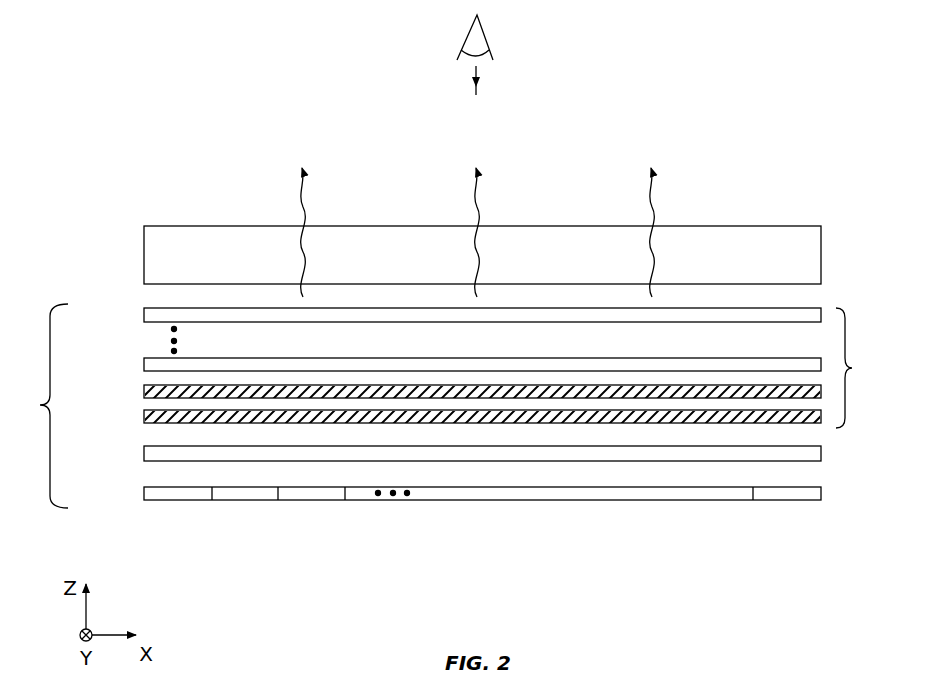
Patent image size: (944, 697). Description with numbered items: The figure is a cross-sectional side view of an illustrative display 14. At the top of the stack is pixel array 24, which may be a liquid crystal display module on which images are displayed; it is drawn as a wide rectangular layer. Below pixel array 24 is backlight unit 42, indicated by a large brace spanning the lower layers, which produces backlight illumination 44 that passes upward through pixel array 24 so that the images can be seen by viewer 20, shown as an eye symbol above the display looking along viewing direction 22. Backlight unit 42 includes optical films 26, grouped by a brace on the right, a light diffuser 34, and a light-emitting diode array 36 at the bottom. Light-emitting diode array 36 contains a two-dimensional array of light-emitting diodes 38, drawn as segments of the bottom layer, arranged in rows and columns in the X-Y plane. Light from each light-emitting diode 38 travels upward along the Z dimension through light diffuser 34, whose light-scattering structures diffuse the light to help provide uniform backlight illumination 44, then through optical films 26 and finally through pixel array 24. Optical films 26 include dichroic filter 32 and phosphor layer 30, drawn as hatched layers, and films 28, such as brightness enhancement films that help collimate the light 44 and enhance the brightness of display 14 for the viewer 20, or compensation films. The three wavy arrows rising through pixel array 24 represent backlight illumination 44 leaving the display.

The display 14 is at (803, 146).
The viewer 20 is at (479, 33).
The viewing direction 22 is at (478, 82).
The pixel array 24 is at (821, 253).
The optical films 26 is at (857, 368).
The films 28 is at (144, 364).
The phosphor layer 30 is at (144, 392).
The dichroic filter 32 is at (144, 418).
The light diffuser 34 is at (822, 453).
The light-emitting diode array 36 is at (842, 496).
The light-emitting diodes 38 is at (245, 500).
The backlight unit 42 is at (37, 406).
The backlight illumination 44 is at (308, 197).